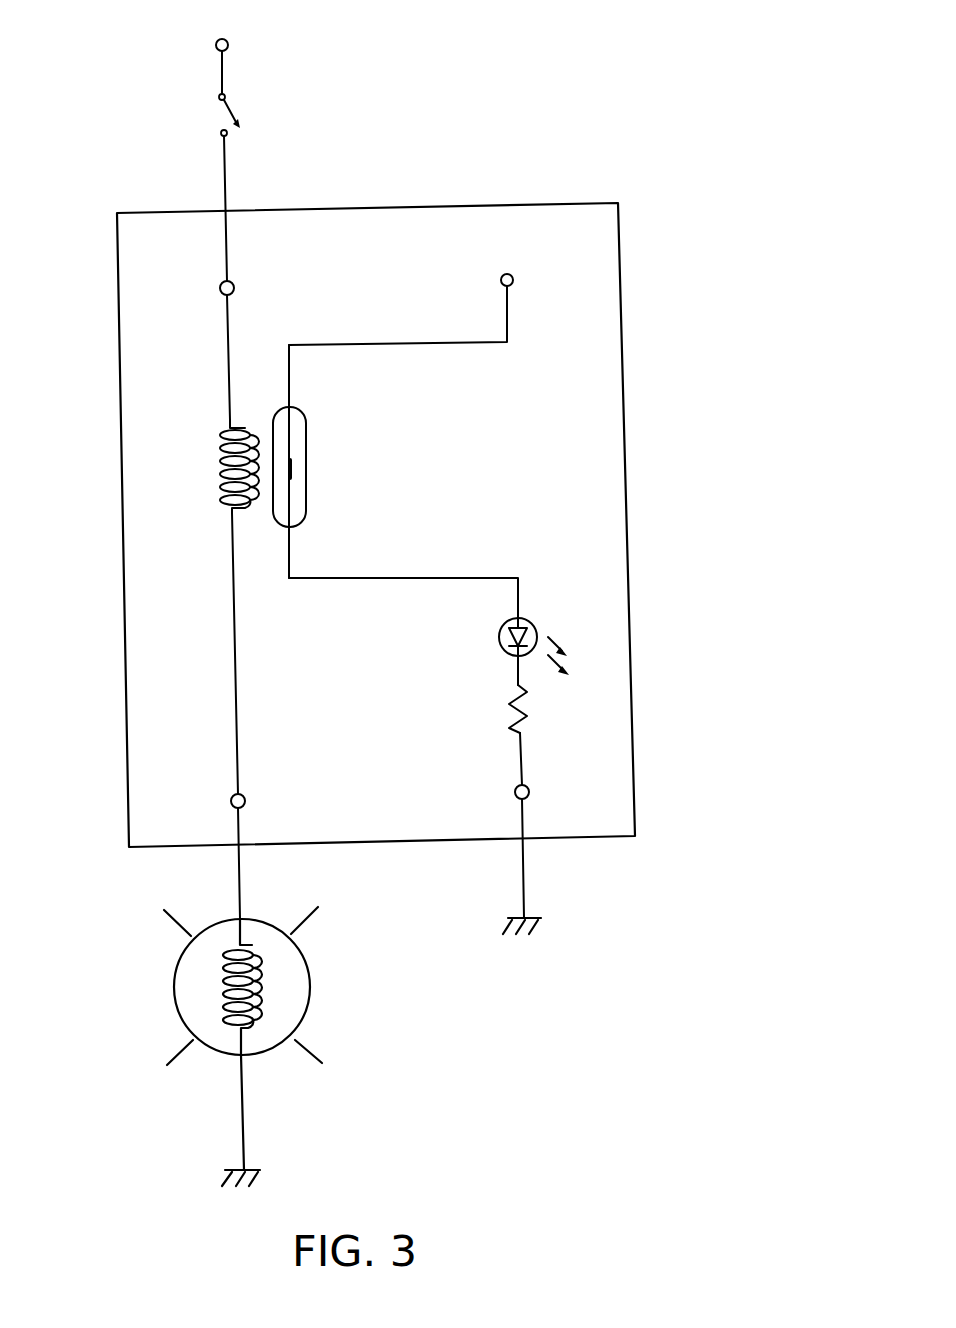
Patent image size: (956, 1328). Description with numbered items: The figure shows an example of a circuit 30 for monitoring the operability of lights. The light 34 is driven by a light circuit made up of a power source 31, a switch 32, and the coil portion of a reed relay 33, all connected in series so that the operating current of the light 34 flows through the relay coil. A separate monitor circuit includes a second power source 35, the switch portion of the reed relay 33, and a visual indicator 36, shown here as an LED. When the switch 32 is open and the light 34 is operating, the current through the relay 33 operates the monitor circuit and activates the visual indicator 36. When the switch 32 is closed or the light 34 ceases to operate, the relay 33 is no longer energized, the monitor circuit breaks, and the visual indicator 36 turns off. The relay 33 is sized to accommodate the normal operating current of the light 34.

The circuit 30 is at (580, 114).
The power source 31 is at (215, 46).
The switch 32 is at (200, 120).
The reed relay 33 is at (180, 532).
The light 34 is at (163, 1024).
The power source 35 is at (513, 279).
The visual indicator 36 is at (531, 621).